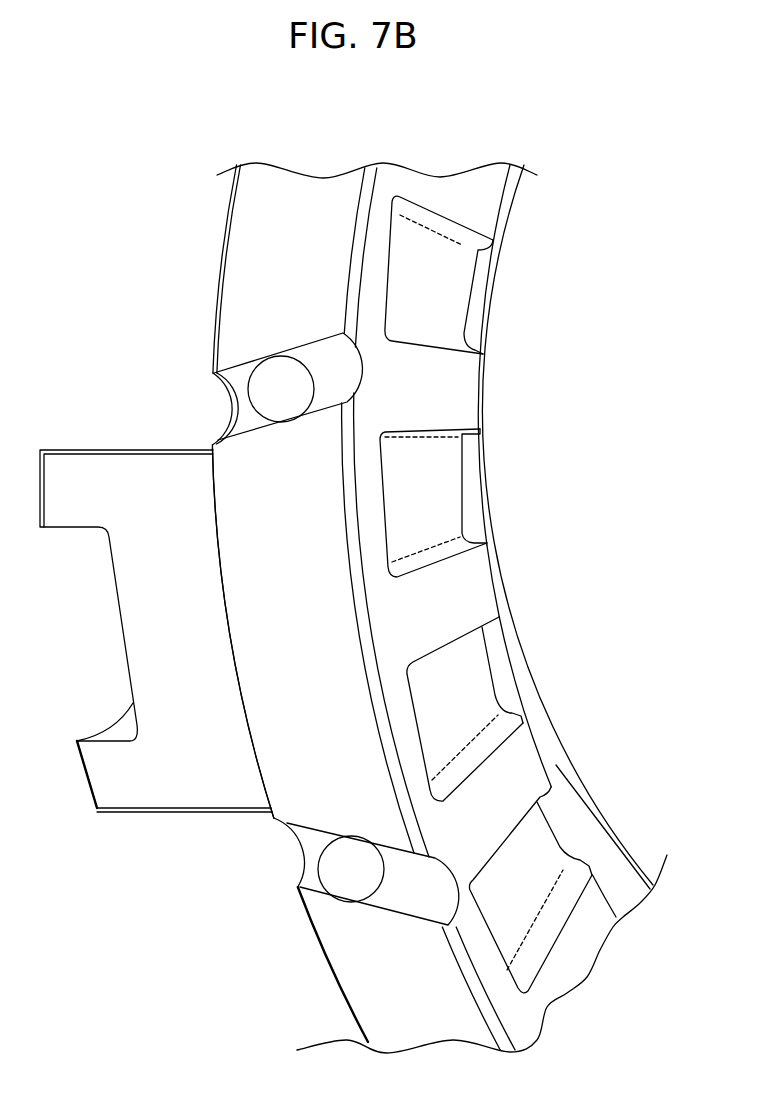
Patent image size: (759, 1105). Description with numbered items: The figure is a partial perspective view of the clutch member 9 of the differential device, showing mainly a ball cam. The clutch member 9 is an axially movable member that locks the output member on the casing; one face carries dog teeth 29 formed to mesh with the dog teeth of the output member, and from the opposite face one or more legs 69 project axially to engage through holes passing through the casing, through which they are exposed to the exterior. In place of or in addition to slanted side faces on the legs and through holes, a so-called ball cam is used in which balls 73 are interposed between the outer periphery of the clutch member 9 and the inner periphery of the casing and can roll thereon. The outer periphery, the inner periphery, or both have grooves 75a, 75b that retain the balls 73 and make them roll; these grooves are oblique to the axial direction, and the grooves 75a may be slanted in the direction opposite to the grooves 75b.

The clutch member 9 is at (411, 128).
The dog teeth 29 is at (445, 500).
The leg 69 is at (92, 772).
The ball 73 is at (277, 366).
The groove 75a is at (231, 405).
The groove 75b is at (297, 850).